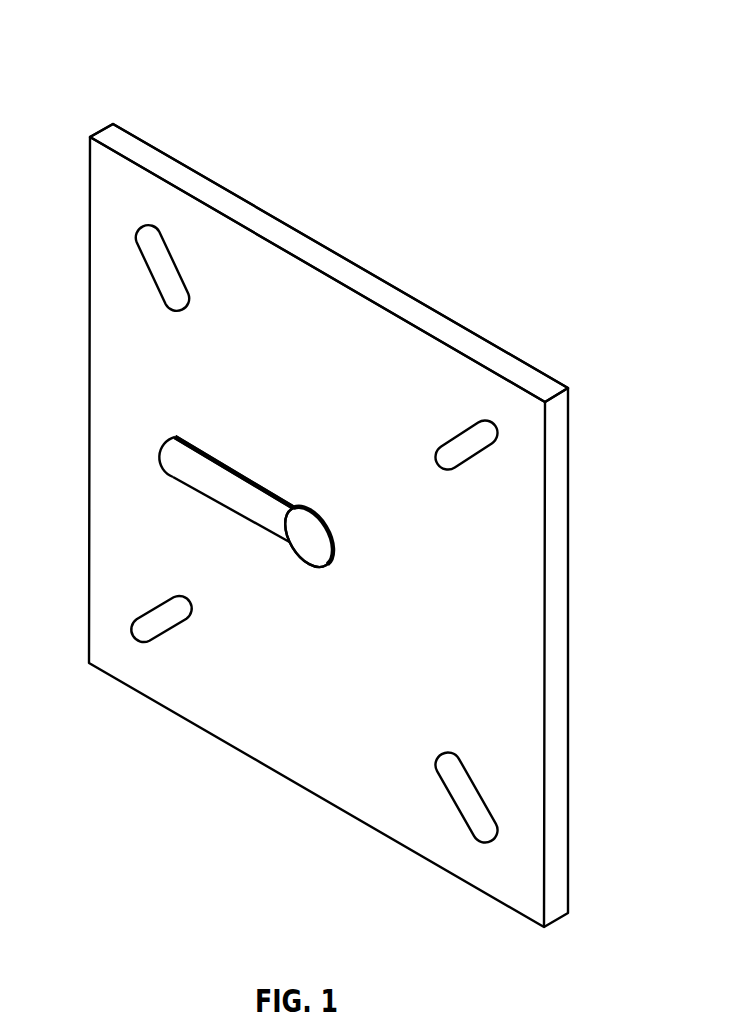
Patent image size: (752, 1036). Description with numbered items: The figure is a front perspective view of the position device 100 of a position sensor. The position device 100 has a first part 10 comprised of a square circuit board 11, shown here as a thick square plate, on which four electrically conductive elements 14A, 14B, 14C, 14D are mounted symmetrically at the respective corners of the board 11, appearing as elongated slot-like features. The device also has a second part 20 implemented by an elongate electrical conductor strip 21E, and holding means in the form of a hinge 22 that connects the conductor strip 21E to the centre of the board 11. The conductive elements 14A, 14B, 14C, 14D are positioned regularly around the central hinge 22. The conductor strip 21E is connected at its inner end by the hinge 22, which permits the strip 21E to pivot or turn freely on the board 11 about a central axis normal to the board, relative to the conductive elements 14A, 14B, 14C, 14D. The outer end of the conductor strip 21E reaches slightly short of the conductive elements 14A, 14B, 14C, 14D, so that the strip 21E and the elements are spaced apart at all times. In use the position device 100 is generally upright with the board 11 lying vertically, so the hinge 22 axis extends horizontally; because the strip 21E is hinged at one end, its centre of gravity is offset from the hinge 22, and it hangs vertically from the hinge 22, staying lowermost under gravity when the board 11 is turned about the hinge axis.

The position device 100 is at (517, 102).
The first part 10 is at (400, 290).
The circuit board 11 is at (285, 242).
The electrically conductive element 14A is at (150, 238).
The electrically conductive element 14B is at (475, 442).
The electrically conductive element 14C is at (470, 810).
The electrically conductive element 14D is at (145, 633).
The second part 20 is at (273, 542).
The electrical conductor strip 21E is at (193, 467).
The hinge 22 is at (305, 526).